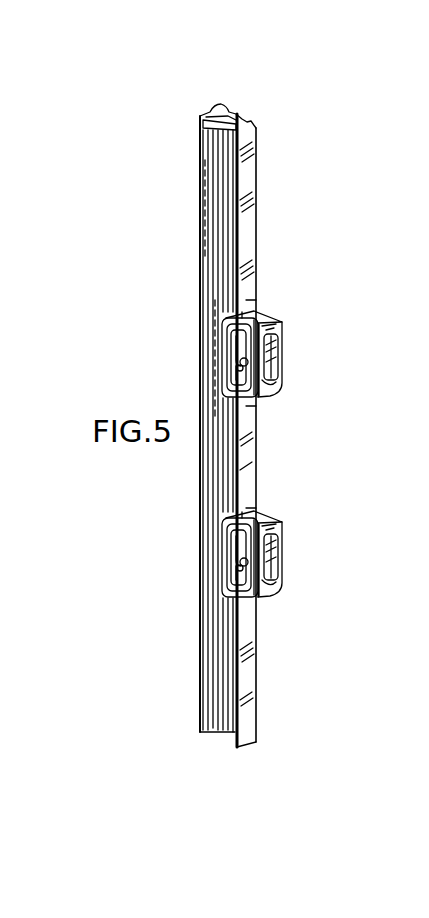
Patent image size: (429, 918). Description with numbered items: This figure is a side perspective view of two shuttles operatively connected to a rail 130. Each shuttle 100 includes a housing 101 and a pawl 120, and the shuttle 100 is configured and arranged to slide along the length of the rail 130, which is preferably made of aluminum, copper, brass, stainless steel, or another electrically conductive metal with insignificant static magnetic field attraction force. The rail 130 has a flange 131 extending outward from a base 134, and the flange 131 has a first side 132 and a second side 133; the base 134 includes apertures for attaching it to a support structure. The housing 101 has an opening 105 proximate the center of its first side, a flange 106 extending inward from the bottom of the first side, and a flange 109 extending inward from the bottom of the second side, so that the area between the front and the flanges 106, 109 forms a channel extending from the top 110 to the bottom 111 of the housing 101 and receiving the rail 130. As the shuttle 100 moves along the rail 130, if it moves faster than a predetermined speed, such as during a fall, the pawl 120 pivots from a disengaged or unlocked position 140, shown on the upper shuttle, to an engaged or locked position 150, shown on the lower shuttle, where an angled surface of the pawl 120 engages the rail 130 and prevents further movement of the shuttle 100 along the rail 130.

The shuttle 100 is at (272, 313).
The housing 101 is at (232, 382).
The opening 105 is at (240, 353).
The flange 106 is at (242, 518).
The flange 109 is at (261, 502).
The top 110 is at (258, 294).
The bottom 111 is at (262, 410).
The pawl 120 is at (266, 358).
The rail 130 is at (241, 418).
The flange 131 is at (246, 183).
The first side 132 is at (222, 134).
The second side 133 is at (267, 121).
The base 134 is at (226, 258).
The disengaged or unlocked position 140 is at (306, 349).
The engaged or locked position 150 is at (307, 549).